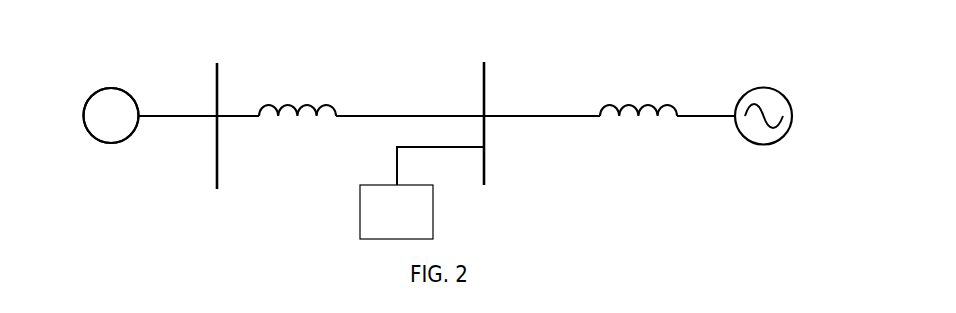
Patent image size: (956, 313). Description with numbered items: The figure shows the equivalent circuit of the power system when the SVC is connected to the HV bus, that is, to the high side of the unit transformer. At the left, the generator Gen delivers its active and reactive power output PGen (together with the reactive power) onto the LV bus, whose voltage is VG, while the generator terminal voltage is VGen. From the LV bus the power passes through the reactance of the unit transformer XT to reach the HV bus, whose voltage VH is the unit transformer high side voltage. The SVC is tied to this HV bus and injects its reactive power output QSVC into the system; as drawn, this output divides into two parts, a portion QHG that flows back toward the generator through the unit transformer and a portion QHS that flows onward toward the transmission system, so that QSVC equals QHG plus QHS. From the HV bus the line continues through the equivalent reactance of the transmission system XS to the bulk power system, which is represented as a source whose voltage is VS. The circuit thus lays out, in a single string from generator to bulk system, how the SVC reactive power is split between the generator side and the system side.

The generator Gen is at (111, 115).
The generator terminal voltage VGen is at (111, 131).
The active power output from the generator PGen is at (172, 73).
The LV bus voltage VG is at (216, 124).
The reactance of unit transformer XT is at (297, 105).
The reactive power flow toward the generator QHG is at (430, 109).
The unit transformer high side voltage VH is at (508, 124).
The reactive power flow toward the bulk power system QHS is at (530, 109).
The equivalent reactance of the transmission system XS is at (637, 104).
The voltage of the bulk power system VS is at (767, 104).
The static VAR compensator SVC is at (422, 193).
The reactive power output from the SVC QSVC is at (387, 161).